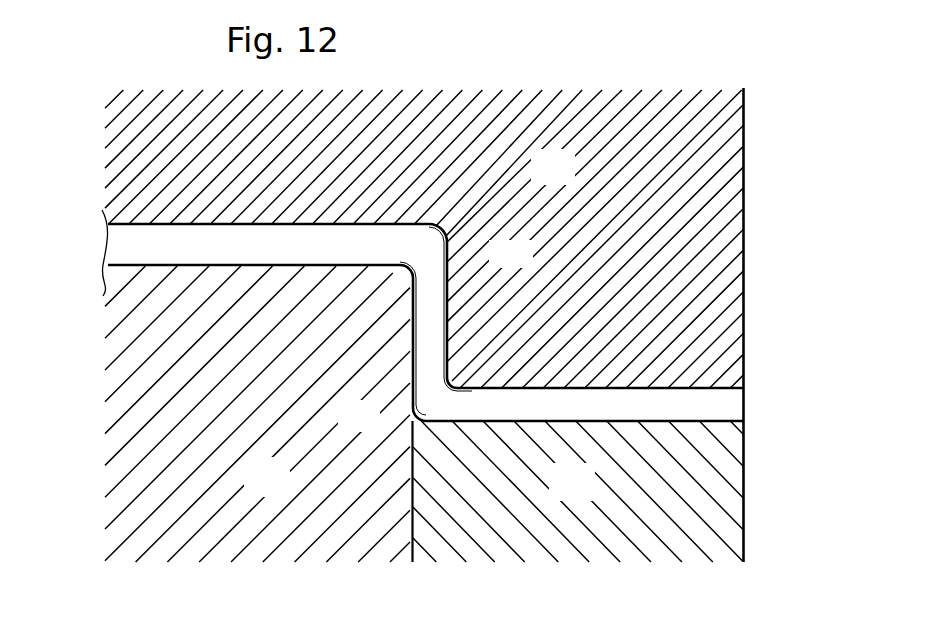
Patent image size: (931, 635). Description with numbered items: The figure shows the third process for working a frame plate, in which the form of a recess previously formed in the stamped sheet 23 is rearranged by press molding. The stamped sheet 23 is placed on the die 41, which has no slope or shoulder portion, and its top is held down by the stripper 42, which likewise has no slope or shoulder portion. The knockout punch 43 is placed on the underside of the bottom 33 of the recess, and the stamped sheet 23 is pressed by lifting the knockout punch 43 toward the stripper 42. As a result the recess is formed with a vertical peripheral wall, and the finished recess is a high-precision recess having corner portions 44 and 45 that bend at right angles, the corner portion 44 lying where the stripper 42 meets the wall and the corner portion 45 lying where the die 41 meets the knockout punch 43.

The stamped sheet 23 is at (158, 252).
The bottom of the recess 33 is at (647, 402).
The die 41 is at (250, 492).
The stripper 42 is at (537, 182).
The knockout punch 43 is at (555, 497).
The corner portion 44 is at (436, 228).
The corner portion 45 is at (411, 415).